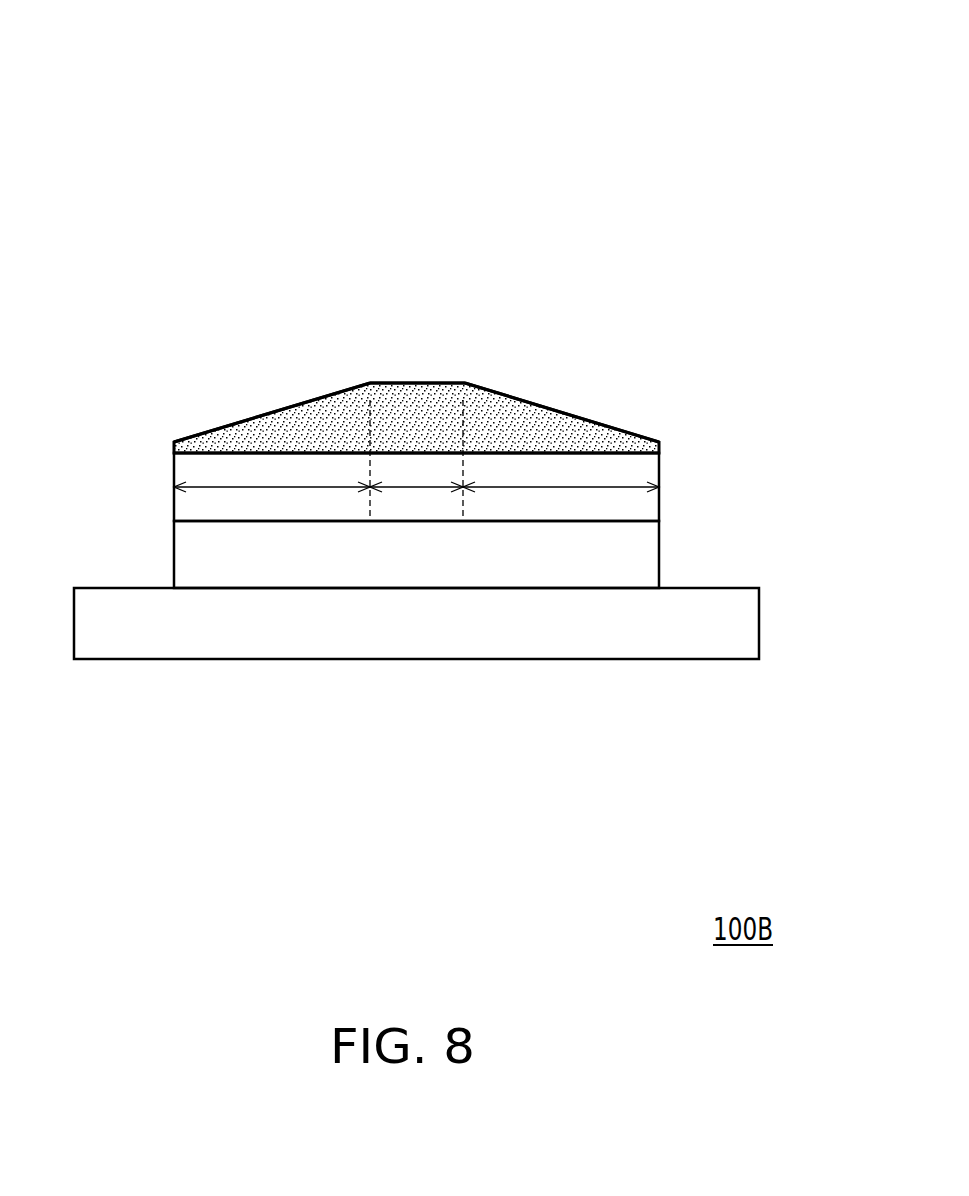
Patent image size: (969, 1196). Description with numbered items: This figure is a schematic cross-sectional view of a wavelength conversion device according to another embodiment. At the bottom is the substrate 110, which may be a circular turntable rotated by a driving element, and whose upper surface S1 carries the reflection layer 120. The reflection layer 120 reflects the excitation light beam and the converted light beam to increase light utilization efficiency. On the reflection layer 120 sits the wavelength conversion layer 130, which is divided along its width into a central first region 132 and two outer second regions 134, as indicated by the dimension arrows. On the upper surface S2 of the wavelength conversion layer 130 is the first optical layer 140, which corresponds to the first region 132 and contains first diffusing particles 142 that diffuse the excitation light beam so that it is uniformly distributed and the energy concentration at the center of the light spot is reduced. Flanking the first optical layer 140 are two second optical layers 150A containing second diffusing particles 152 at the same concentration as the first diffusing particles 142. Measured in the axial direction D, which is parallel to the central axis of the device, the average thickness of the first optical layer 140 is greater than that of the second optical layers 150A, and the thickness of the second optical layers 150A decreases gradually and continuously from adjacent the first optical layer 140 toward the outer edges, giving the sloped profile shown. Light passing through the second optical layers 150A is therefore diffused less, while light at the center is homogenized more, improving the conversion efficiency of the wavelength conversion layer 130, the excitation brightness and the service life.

The substrate 110 is at (742, 625).
The reflection layer 120 is at (640, 541).
The wavelength conversion layer 130 is at (652, 503).
The first region 132 is at (407, 488).
The second regions 134 is at (209, 487).
The first optical layer 140 is at (445, 392).
The first diffusing particles 142 is at (400, 392).
The second optical layers 150A is at (260, 433).
The second diffusing particles 152 is at (293, 423).
The upper surface of the substrate S1 is at (104, 588).
The upper surface of the wavelength conversion layer S2 is at (226, 452).
The axial direction D is at (37, 0).